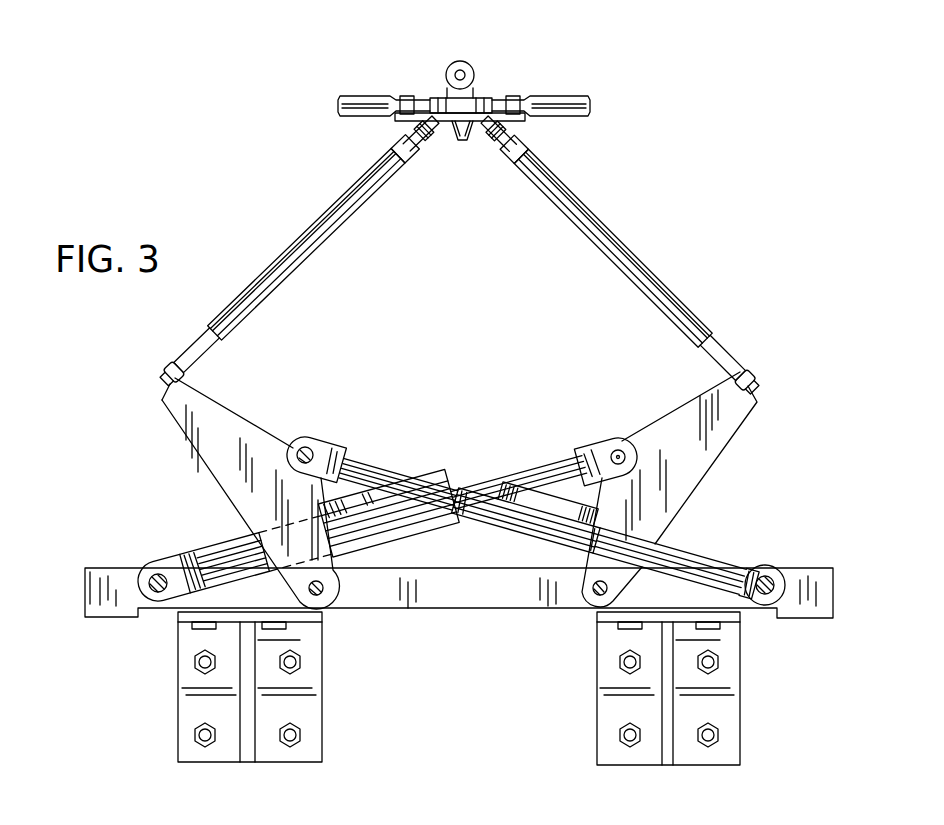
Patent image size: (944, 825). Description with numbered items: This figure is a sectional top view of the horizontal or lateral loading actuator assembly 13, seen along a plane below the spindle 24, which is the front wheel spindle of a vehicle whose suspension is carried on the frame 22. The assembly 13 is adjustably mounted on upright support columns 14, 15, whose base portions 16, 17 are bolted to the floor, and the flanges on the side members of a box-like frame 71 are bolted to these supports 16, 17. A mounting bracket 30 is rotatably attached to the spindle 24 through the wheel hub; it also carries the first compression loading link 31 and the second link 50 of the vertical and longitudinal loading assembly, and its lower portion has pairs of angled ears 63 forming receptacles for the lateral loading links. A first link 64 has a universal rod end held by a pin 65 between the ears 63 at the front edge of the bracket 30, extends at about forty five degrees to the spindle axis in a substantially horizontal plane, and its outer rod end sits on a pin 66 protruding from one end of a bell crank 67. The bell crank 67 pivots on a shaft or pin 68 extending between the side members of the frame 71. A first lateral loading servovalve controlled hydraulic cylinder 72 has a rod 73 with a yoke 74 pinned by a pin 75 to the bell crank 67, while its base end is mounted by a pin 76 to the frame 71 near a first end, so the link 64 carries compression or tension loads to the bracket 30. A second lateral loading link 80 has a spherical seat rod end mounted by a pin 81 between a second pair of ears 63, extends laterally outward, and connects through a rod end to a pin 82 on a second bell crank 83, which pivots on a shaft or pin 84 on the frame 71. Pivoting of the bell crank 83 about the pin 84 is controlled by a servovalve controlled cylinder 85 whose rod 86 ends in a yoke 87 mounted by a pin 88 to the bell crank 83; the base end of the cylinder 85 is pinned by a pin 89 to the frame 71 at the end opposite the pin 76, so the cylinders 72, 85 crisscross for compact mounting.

The actuator assembly 13 is at (146, 658).
The upright support column 14 is at (322, 724).
The upright support column 15 is at (740, 668).
The base portion 16 is at (308, 680).
The base portion 17 is at (600, 720).
The frame of the vehicle 22 is at (466, 62).
The spindle 24 is at (478, 96).
The mounting bracket 30 is at (447, 108).
The first compression loading link 31 is at (566, 100).
The second link 50 is at (366, 100).
The ears 63 is at (420, 134).
The first link 64 is at (636, 258).
The pin 65 is at (498, 148).
The pin 66 is at (760, 384).
The bell crank 67 is at (742, 420).
The shaft or pin 68 is at (582, 604).
The frame 71 is at (478, 604).
The first lateral loading hydraulic cylinder 72 is at (410, 522).
The rod 73 is at (552, 468).
The yoke 74 is at (600, 440).
The pin 75 is at (628, 457).
The pin 76 is at (152, 578).
The second lateral loading link 80 is at (318, 246).
The pin 81 is at (426, 162).
The pin 82 is at (162, 380).
The bell crank 83 is at (218, 398).
The shaft or pin 84 is at (328, 604).
The cylinder or actuator 85 is at (472, 488).
The rod 86 is at (388, 476).
The yoke 87 is at (332, 448).
The pin 88 is at (310, 446).
The pin 89 is at (768, 578).